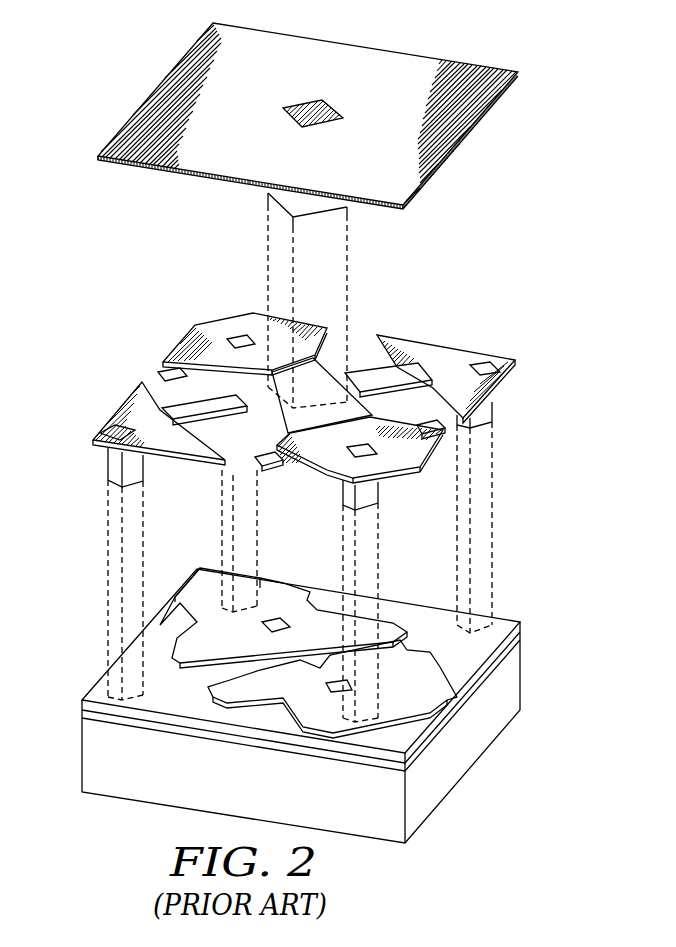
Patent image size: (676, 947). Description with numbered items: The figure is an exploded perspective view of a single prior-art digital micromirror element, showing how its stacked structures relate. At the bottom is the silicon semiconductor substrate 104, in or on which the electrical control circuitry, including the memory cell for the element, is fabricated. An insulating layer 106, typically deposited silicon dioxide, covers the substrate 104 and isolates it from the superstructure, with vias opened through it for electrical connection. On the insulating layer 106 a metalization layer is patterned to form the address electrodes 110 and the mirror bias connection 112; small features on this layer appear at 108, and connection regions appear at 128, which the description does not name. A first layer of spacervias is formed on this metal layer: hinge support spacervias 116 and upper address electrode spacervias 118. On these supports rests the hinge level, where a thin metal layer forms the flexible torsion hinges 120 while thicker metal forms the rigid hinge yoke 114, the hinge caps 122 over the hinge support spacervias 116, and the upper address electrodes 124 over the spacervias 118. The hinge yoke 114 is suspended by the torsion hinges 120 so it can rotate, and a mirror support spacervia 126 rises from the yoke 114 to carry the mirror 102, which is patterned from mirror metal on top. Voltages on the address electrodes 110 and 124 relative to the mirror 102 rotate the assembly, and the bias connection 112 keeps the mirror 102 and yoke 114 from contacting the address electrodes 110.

The mirror 102 is at (395, 72).
The silicon semiconductor substrate 104 is at (458, 752).
The insulating layer 106 is at (82, 712).
The contact pad 108 is at (260, 625).
The address electrode 110 is at (205, 610).
The mirror bias connection 112 is at (98, 692).
The hinge yoke 114 is at (357, 348).
The hinge support spacervia 116 is at (112, 463).
The upper address electrode spacervia 118 is at (370, 490).
The torsion hinge 120 is at (158, 375).
The hinge cap 122 is at (135, 405).
The upper address electrode 124 is at (240, 327).
The mirror support spacervia 126 is at (317, 207).
The connector tab 128 is at (270, 467).